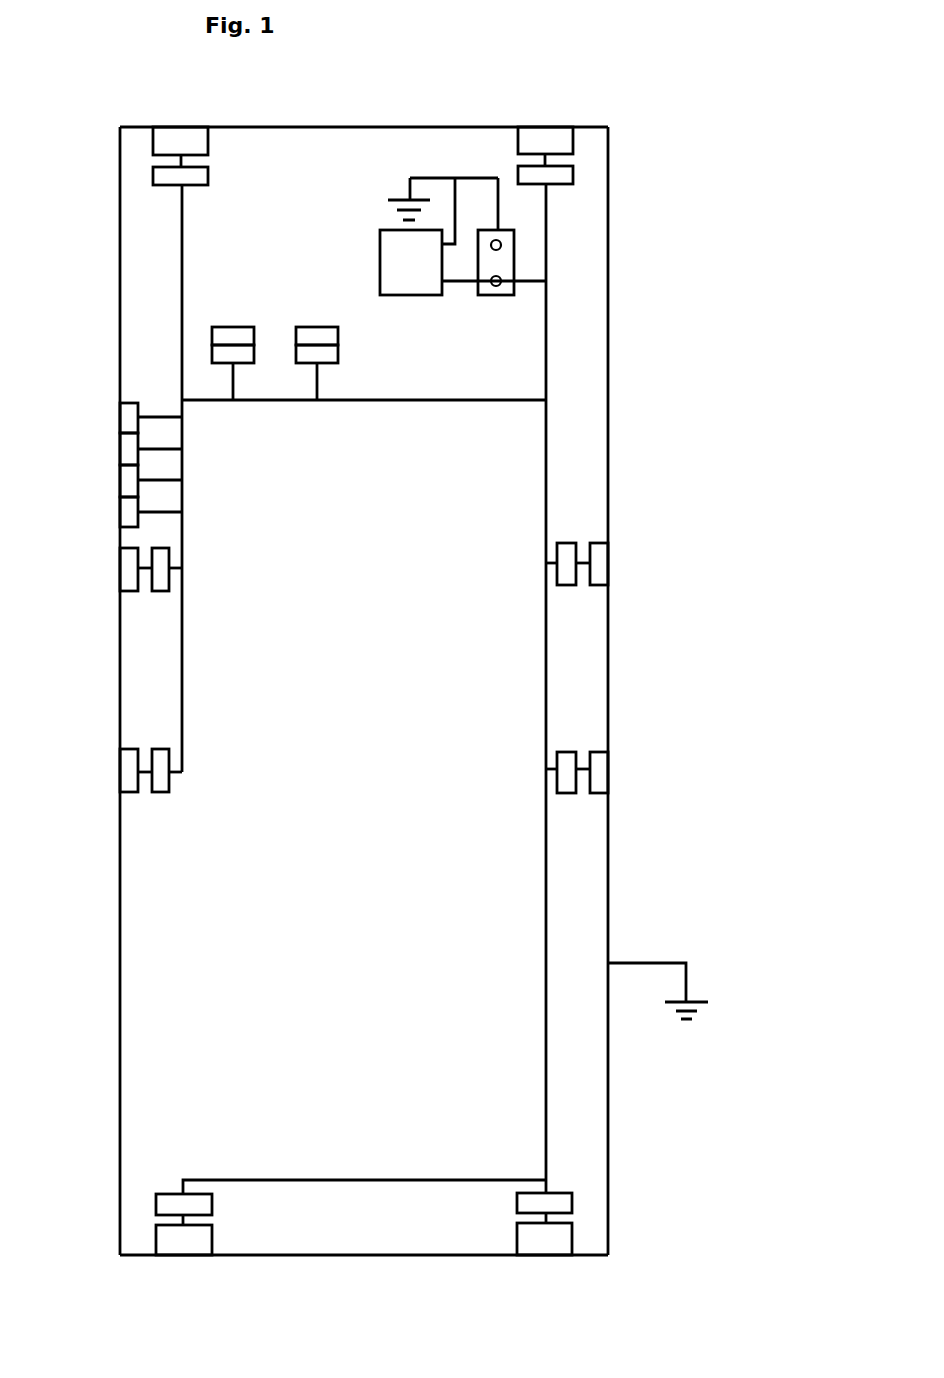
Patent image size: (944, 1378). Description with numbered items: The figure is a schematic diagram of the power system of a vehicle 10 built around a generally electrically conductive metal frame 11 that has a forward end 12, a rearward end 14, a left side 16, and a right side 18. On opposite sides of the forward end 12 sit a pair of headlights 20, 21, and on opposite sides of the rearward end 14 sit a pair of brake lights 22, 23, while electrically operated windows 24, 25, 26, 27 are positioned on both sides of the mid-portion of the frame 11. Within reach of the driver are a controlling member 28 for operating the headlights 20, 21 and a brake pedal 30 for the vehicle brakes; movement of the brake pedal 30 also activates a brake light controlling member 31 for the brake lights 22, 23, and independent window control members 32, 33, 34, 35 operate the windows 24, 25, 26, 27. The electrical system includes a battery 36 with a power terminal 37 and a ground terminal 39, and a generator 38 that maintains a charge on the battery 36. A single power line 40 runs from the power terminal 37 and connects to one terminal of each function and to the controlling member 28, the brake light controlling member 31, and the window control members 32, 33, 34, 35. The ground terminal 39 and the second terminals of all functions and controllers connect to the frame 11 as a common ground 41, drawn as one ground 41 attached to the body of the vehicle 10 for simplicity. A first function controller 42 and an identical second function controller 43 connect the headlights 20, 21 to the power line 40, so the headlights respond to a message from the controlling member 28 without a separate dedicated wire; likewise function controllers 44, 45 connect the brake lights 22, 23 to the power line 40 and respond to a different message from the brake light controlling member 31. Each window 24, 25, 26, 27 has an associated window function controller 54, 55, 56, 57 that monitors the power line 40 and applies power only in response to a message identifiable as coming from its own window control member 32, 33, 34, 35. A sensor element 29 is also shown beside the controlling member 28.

The vehicle 10 is at (415, 696).
The frame 11 is at (448, 689).
The forward end 12 is at (307, 127).
The rearward end 14 is at (387, 1256).
The left side 16 is at (119, 900).
The right side 18 is at (612, 878).
The headlight 20 is at (178, 138).
The headlight 21 is at (538, 140).
The brake light 22 is at (180, 1250).
The brake light 23 is at (538, 1250).
The electrically operated window 24 is at (122, 572).
The electrically operated window 25 is at (606, 567).
The electrically operated window 26 is at (126, 772).
The electrically operated window 27 is at (606, 765).
The controlling member 28 is at (217, 355).
The first sensor element 29 is at (225, 333).
The brake pedal 30 is at (308, 332).
The brake light controlling member 31 is at (338, 355).
The window control member 32 is at (122, 419).
The window control member 33 is at (122, 451).
The window control member 34 is at (122, 485).
The window control member 35 is at (122, 515).
The battery 36 is at (507, 295).
The power terminal 37 is at (502, 280).
The generator 38 is at (425, 275).
The ground terminal 39 is at (502, 247).
The power line 40 is at (548, 482).
The ground 41 is at (412, 185).
The function controller 42 is at (203, 176).
The function controller 43 is at (518, 170).
The function controller 44 is at (168, 1200).
The function controller 45 is at (568, 1203).
The window function controller 54 is at (160, 587).
The window function controller 55 is at (568, 587).
The window function controller 56 is at (162, 790).
The window function controller 57 is at (568, 795).